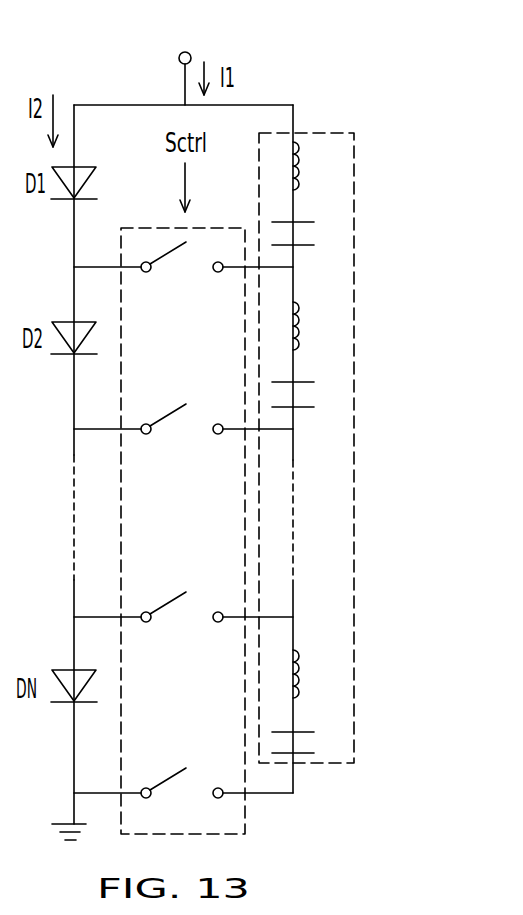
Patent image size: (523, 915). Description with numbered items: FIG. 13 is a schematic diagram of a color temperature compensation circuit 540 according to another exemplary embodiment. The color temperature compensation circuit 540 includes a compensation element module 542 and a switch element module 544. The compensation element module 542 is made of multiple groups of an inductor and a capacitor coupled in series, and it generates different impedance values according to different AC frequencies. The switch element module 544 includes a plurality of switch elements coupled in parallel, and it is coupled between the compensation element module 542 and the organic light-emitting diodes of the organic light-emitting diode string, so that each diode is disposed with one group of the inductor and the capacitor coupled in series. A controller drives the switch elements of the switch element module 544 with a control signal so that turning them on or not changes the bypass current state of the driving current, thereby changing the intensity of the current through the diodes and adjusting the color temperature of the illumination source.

The color temperature compensation circuit 540 is at (448, 80).
The compensation element module 542 is at (355, 170).
The switch element module 544 is at (222, 228).